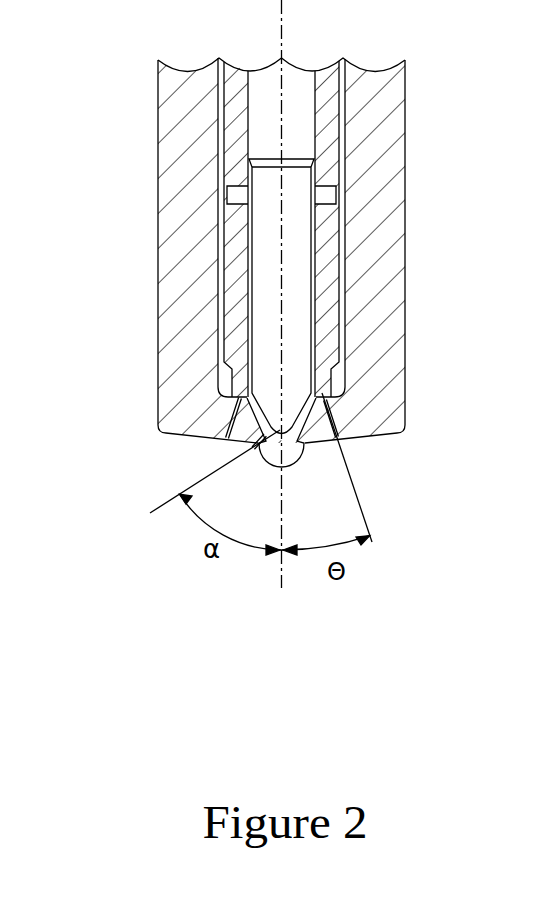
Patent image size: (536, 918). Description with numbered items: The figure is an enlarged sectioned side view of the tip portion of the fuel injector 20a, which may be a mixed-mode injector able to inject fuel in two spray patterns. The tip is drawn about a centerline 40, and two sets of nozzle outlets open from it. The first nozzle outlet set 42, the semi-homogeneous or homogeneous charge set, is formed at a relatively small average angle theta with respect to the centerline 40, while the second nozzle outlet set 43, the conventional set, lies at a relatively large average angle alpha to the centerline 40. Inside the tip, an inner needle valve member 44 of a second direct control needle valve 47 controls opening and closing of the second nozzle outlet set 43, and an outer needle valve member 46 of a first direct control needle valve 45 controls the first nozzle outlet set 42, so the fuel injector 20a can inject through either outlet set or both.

The fuel injector 20a is at (405, 246).
The centerline 40 is at (284, 568).
The first nozzle outlet set 42 is at (233, 415).
The second nozzle outlet set 43 is at (340, 438).
The inner needle valve member 44 is at (313, 263).
The first direct control needle valve 45 is at (217, 338).
The outer needle valve member 46 is at (235, 353).
The second direct control needle valve 47 is at (244, 270).